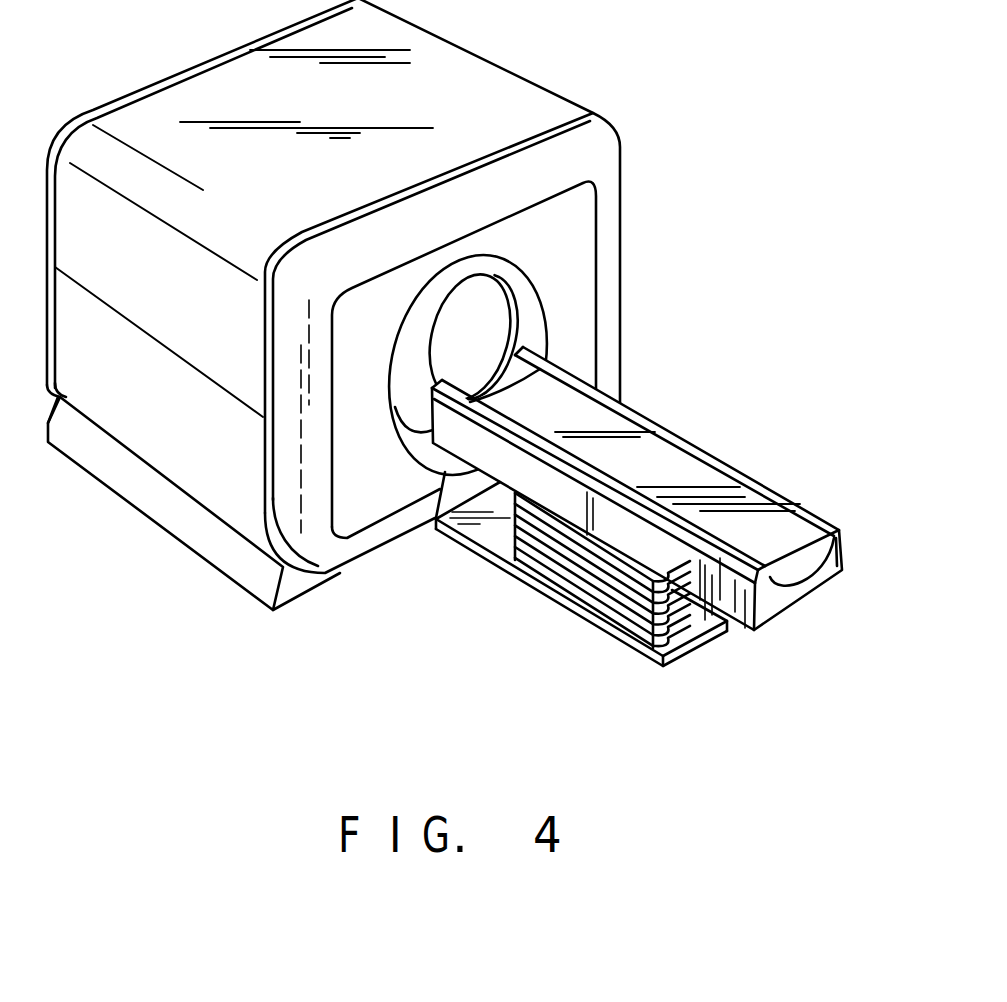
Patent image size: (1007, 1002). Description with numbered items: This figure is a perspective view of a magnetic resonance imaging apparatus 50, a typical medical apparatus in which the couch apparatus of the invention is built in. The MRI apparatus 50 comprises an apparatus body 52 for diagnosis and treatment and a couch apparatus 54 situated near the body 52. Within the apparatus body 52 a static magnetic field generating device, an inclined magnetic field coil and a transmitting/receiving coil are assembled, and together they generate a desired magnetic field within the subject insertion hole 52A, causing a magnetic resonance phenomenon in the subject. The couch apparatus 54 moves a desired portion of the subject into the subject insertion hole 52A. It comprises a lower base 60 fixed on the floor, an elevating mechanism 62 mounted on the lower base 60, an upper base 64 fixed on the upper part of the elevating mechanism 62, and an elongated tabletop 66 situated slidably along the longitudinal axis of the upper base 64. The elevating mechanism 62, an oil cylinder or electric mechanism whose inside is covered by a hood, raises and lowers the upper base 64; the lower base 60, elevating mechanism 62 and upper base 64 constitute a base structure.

The magnetic resonance imaging apparatus 50 is at (447, 370).
The apparatus body 52 is at (575, 98).
The subject insertion hole 52A is at (473, 317).
The couch apparatus 54 is at (640, 520).
The lower base 60 is at (679, 658).
The elevating mechanism 62 is at (622, 600).
The upper base 64 is at (754, 631).
The tabletop 66 is at (800, 527).